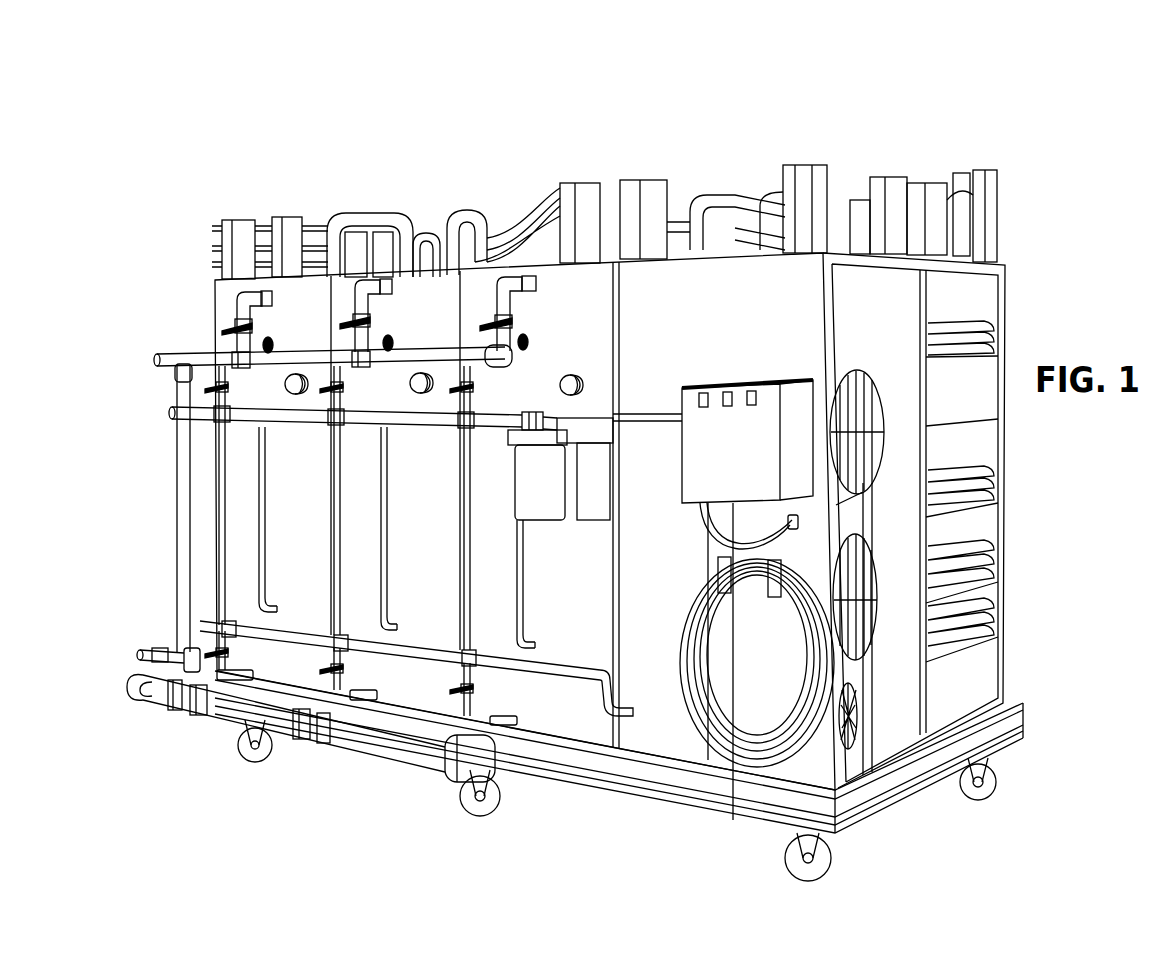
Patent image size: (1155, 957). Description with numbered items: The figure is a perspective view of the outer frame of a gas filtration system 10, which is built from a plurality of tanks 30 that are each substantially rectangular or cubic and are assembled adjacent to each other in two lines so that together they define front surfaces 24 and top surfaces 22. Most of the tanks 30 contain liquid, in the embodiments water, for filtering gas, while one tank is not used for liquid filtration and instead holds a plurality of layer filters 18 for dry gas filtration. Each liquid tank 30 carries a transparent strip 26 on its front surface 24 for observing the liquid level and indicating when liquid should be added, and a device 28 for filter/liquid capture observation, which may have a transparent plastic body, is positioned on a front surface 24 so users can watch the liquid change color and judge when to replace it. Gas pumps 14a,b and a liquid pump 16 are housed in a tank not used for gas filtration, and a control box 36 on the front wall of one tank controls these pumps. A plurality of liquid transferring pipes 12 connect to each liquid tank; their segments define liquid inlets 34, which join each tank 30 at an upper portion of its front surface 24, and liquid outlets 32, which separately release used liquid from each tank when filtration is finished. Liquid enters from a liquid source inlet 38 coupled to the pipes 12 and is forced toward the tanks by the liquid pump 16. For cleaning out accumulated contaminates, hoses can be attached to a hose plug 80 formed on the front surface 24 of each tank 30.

The gas filtration system 10 is at (1037, 526).
The liquid transferring pipes 12 is at (177, 392).
The gas pumps 14a,b is at (880, 432).
The liquid pump 16 is at (858, 716).
The layer filters 18 is at (963, 617).
The top surfaces 22 is at (892, 255).
The front surfaces 24 is at (712, 295).
The transparent strip 26 is at (258, 540).
The device for filter/liquid capture observation 28 is at (544, 425).
The tanks 30 is at (597, 723).
The liquid outlets 32 is at (358, 740).
The liquid inlets 34 is at (503, 282).
The control box 36 is at (689, 402).
The liquid source inlet 38 is at (138, 651).
The hose plug 80 is at (572, 375).